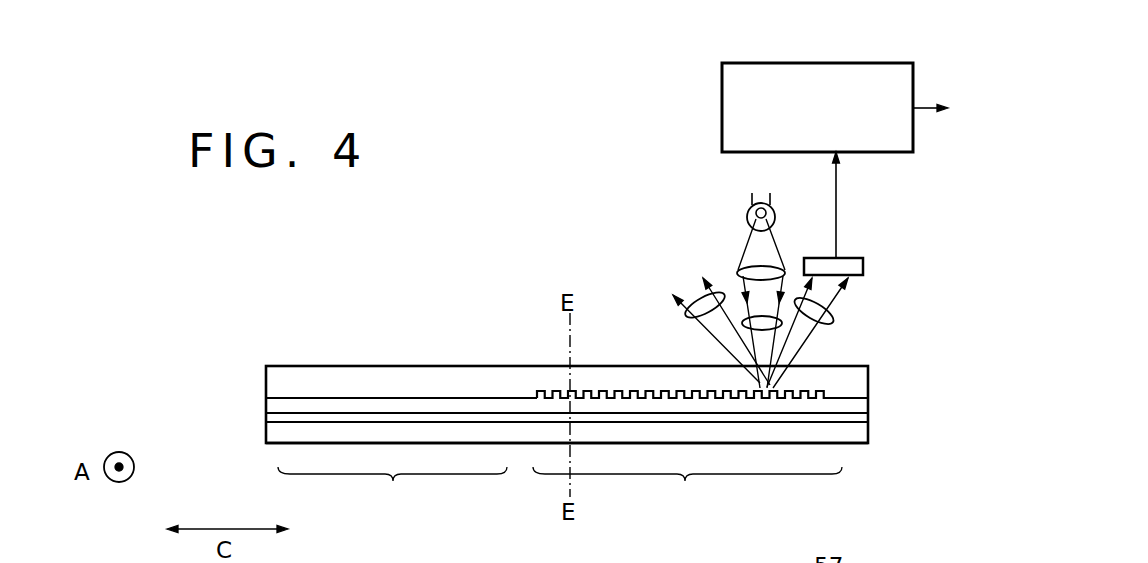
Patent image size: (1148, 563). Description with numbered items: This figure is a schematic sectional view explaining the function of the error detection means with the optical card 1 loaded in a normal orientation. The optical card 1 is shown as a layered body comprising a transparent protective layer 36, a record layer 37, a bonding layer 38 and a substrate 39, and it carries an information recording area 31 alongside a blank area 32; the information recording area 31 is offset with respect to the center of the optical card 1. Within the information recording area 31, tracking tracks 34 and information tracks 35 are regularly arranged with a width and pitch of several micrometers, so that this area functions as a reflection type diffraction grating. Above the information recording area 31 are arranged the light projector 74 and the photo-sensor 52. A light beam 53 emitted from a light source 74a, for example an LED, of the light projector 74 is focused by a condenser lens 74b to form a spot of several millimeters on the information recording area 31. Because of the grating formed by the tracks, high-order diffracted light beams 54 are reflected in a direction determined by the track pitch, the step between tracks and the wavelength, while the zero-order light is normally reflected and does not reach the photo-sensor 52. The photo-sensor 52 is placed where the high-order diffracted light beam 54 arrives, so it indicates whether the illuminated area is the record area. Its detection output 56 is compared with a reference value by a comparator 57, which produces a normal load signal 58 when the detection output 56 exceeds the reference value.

The optical card 1 is at (198, 325).
The information recording area 31 is at (687, 492).
The blank area 32 is at (392, 492).
The tracking tracks 34 is at (821, 392).
The information tracks 35 is at (810, 390).
The transparent protective layer 36 is at (275, 378).
The record layer 37 is at (272, 405).
The bonding layer 38 is at (268, 417).
The substrate 39 is at (273, 436).
The photo-sensor 52 is at (862, 266).
The light beam 53 is at (745, 328).
The high-order diffracted light beams 54 is at (688, 316).
The detection output 56 is at (838, 213).
The comparator 57 is at (841, 62).
The normal load signal 58 is at (928, 104).
The light projector 74 is at (609, 163).
The light source 74a is at (748, 214).
The condenser lens 74b is at (740, 272).